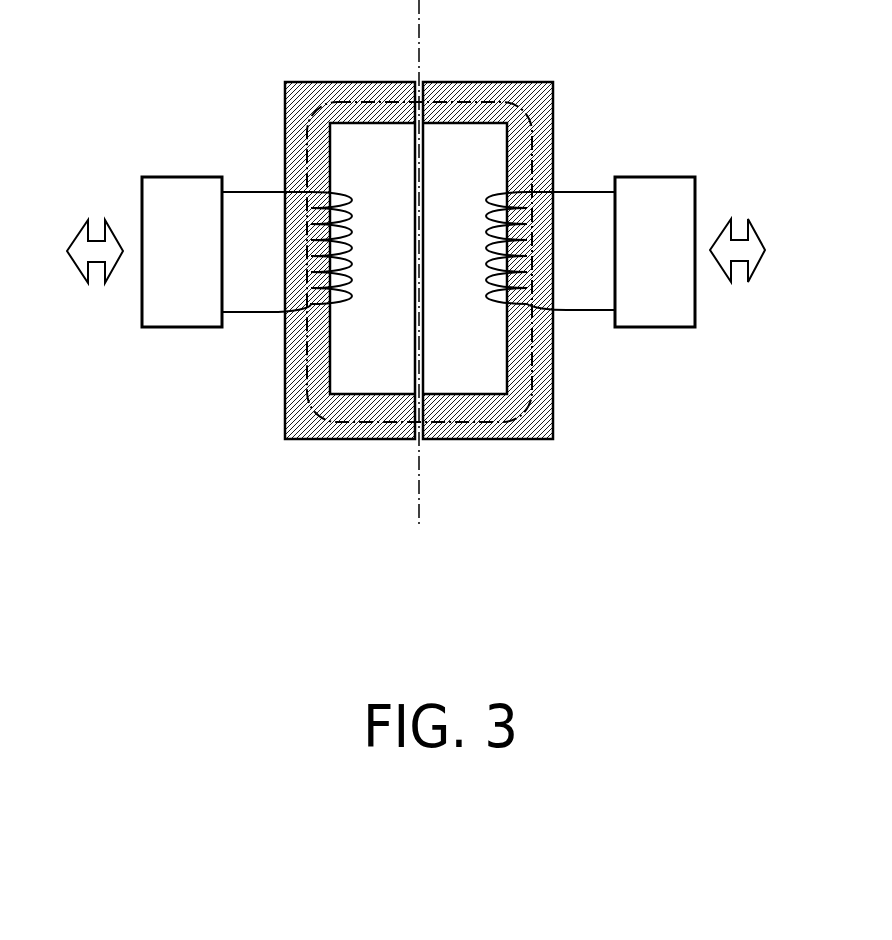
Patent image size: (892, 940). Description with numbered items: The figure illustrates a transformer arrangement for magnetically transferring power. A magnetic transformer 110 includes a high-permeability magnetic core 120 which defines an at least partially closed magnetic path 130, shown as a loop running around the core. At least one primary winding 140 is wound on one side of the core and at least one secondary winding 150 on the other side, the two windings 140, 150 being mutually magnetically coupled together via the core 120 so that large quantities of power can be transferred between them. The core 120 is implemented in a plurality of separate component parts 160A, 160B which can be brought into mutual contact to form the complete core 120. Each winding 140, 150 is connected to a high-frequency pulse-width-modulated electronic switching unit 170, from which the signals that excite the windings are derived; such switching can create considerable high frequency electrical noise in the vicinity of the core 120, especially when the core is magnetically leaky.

The magnetic transformer 110 is at (416, 257).
The high-permeability magnetic core 120 is at (431, 268).
The at least partially closed magnetic path 130 is at (357, 422).
The primary winding 140 is at (260, 312).
The secondary winding 150 is at (588, 192).
The separate component part of magnetic core 160A is at (303, 107).
The separate component part of magnetic core 160B is at (530, 420).
The high-frequency pulse-width-modulated electronic switching unit 170 is at (416, 252).